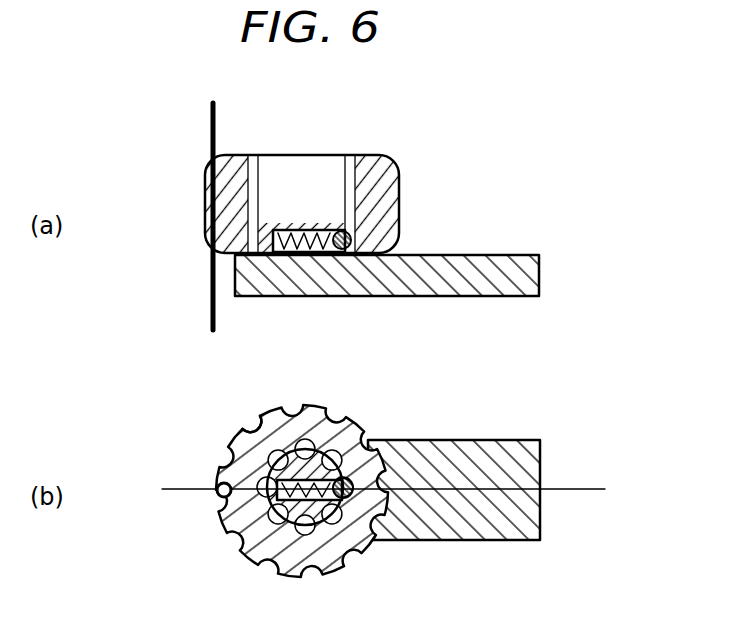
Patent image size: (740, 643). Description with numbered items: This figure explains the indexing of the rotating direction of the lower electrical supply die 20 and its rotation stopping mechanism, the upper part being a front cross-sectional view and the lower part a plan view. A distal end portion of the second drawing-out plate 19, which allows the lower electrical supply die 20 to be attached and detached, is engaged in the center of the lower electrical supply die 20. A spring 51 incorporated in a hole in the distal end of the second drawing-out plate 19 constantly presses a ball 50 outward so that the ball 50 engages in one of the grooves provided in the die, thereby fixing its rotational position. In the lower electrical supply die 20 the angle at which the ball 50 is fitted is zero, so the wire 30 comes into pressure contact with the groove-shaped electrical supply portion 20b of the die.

The second drawing-out plate 19 is at (508, 288).
The lower electrical supply die 20 is at (399, 212).
The groove-shaped electrical supply portion 20b is at (247, 432).
The wire 30 is at (211, 140).
The ball 50 is at (347, 255).
The spring 51 is at (289, 253).